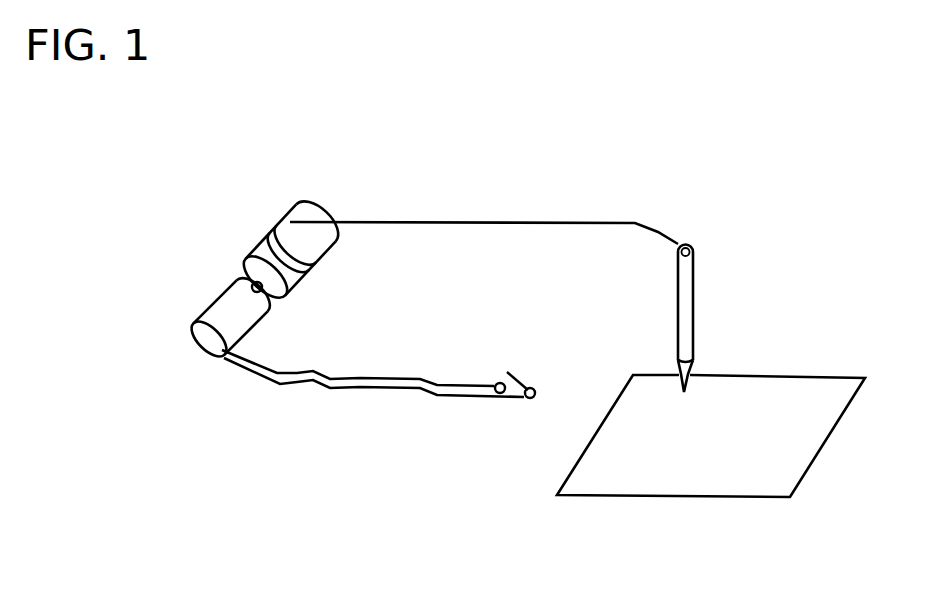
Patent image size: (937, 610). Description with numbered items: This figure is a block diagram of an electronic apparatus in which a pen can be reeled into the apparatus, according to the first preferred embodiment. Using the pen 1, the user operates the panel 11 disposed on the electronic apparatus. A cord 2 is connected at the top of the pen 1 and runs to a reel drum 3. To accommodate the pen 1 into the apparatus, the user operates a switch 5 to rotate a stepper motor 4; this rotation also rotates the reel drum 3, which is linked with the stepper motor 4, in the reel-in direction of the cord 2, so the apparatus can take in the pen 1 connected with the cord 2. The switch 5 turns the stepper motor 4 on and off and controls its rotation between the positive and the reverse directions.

The pen 1 is at (688, 337).
The cord 2 is at (502, 224).
The reel drum 3 is at (290, 207).
The stepper motor 4 is at (208, 302).
The switch 5 is at (520, 380).
The panel 11 is at (722, 497).